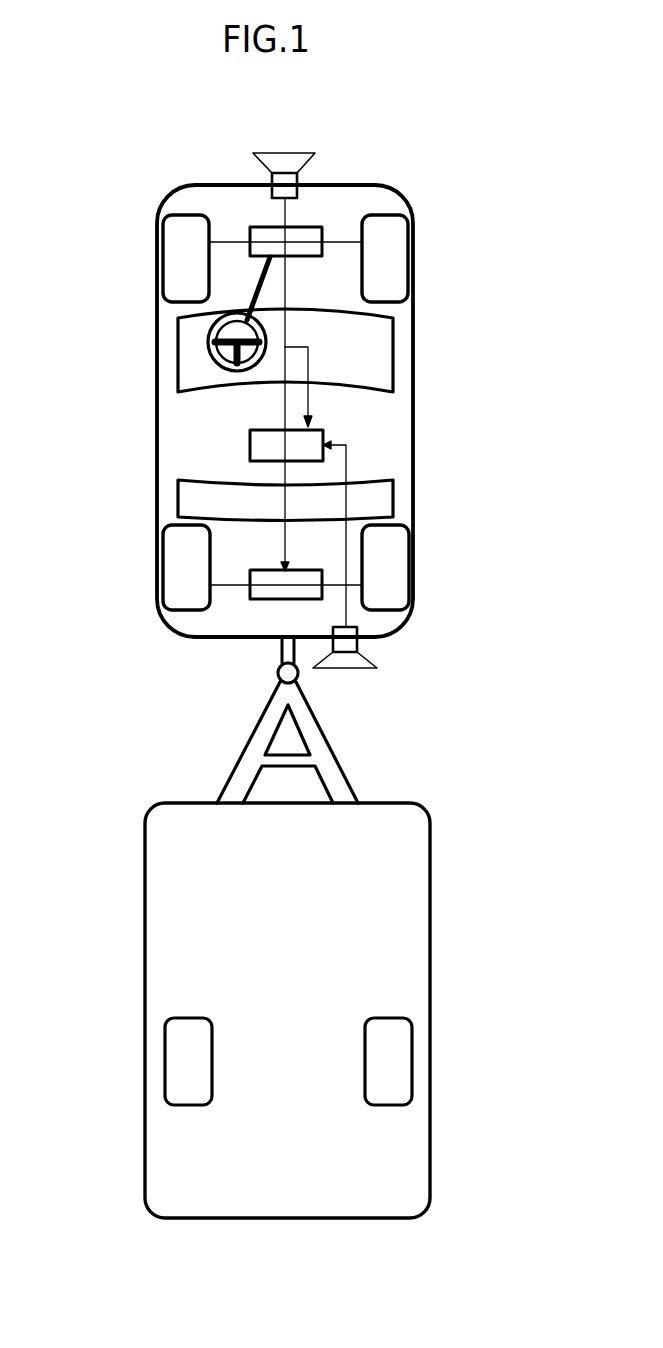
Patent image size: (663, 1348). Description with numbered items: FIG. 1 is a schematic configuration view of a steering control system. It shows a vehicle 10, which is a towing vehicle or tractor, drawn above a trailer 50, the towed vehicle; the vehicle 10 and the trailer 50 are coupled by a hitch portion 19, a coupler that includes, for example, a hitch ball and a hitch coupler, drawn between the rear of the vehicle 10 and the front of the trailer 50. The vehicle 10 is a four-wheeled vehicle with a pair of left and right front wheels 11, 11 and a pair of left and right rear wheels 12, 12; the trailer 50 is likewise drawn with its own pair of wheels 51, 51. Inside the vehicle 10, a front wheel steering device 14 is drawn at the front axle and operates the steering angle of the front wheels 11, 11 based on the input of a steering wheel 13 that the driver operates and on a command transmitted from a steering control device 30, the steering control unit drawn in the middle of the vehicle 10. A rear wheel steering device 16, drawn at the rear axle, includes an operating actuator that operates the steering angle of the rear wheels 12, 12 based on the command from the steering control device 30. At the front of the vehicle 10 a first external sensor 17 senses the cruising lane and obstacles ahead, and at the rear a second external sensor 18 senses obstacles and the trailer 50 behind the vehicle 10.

The vehicle 10 is at (413, 372).
The front wheels 11 is at (158, 265).
The rear wheels 12 is at (160, 568).
The steering wheel 13 is at (208, 362).
The front wheel steering device 14 is at (250, 228).
The rear wheel steering device 16 is at (262, 600).
The first external sensor 17 is at (312, 154).
The second external sensor 18 is at (378, 668).
The hitch portion 19 is at (278, 678).
The steering control device 30 is at (250, 440).
The trailer 50 is at (430, 885).
The trailer wheels 51 is at (165, 1058).